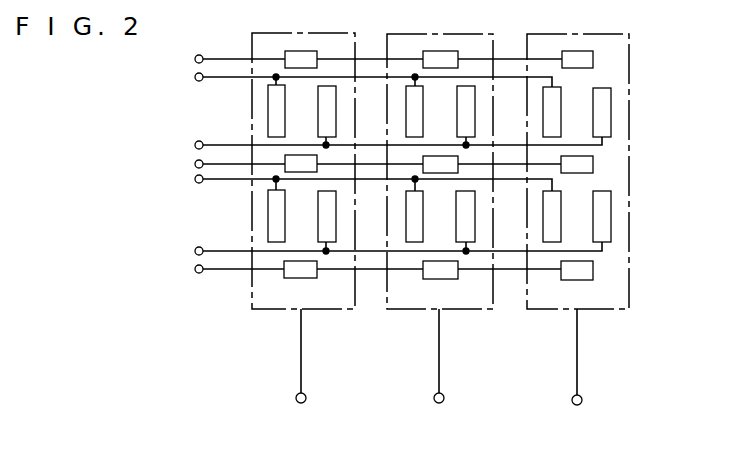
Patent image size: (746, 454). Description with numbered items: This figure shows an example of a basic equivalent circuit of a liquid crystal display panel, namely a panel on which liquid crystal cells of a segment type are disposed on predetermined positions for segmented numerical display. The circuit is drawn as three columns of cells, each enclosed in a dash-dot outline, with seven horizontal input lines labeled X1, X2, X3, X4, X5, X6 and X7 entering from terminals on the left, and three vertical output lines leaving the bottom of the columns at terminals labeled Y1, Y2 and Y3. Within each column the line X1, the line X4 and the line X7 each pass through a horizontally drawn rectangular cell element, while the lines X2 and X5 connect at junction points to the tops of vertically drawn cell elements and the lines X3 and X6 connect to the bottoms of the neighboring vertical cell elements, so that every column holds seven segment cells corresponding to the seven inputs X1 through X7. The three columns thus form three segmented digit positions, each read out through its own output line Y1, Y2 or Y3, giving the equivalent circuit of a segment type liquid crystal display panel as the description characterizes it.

The input terminal X1 is at (372, 61).
The input terminal X2 is at (356, 103).
The input terminal X3 is at (381, 122).
The input terminal X4 is at (372, 165).
The input terminal X5 is at (356, 207).
The input terminal X6 is at (381, 229).
The input terminal X7 is at (372, 272).
The output terminal Y1 is at (306, 373).
The output terminal Y2 is at (444, 373).
The output terminal Y3 is at (583, 373).